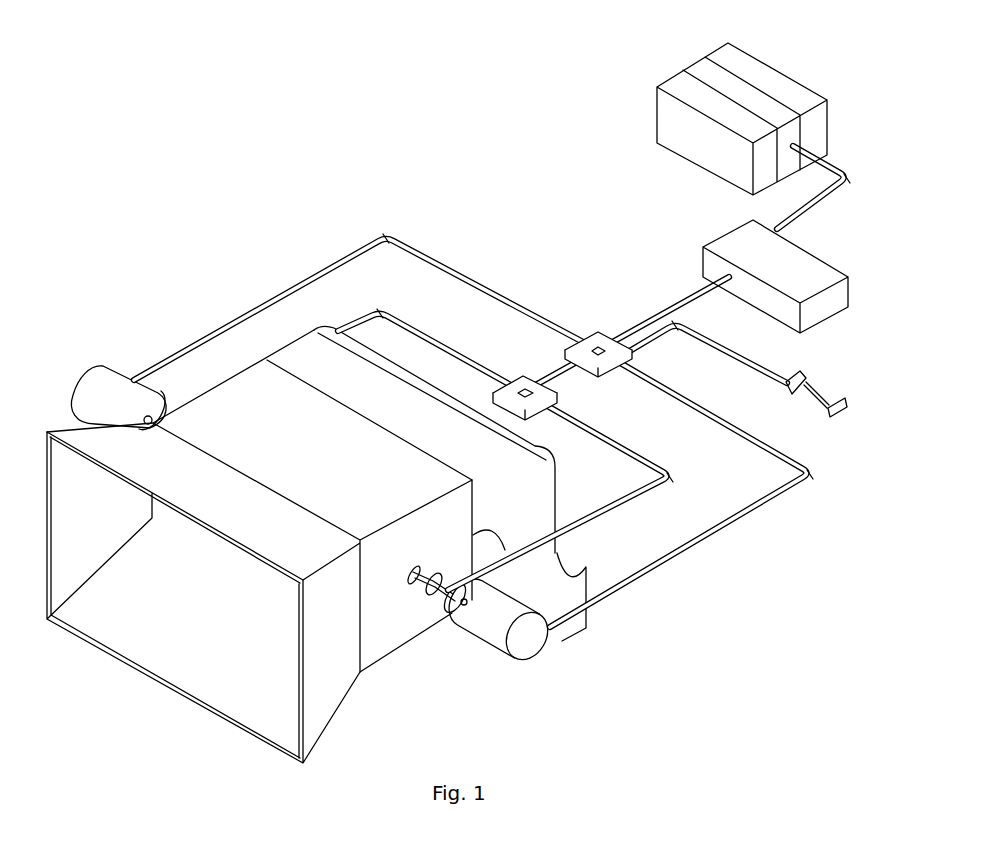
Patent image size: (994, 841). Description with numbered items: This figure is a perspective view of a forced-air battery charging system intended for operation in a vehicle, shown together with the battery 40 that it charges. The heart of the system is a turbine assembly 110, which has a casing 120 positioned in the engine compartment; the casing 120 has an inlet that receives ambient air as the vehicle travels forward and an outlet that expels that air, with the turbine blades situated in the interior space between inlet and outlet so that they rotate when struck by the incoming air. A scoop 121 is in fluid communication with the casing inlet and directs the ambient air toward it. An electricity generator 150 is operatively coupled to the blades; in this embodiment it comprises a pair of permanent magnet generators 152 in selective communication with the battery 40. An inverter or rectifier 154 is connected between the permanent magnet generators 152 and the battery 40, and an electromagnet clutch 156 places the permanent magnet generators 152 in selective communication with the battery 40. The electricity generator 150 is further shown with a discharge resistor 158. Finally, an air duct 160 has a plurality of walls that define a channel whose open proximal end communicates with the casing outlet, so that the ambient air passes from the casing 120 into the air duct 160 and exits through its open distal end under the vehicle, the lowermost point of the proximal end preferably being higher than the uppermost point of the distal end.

The battery 40 is at (700, 73).
The turbine assembly 110 is at (195, 386).
The casing 120 is at (262, 406).
The scoop 121 is at (225, 676).
The electricity generator 150 is at (482, 666).
The permanent magnet generator 152 is at (83, 363).
The inverter or rectifier 154 is at (740, 247).
The electromagnet clutch 156 is at (525, 377).
The discharge resistor 158 is at (840, 417).
The air duct 160 is at (454, 384).